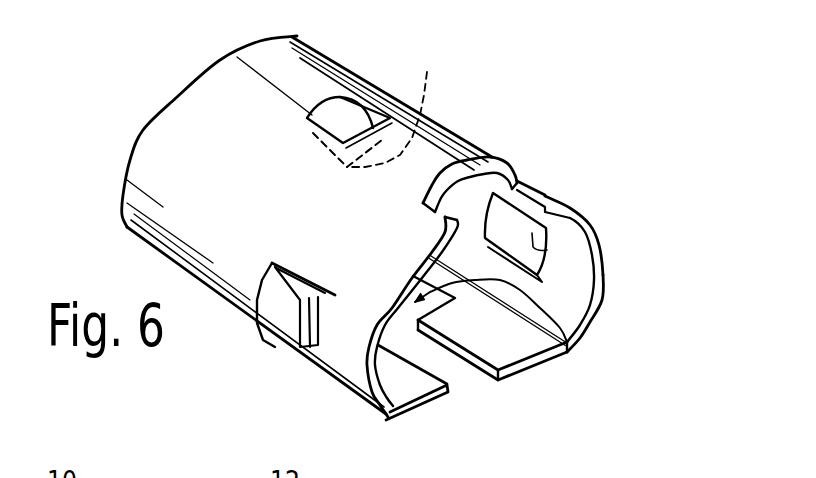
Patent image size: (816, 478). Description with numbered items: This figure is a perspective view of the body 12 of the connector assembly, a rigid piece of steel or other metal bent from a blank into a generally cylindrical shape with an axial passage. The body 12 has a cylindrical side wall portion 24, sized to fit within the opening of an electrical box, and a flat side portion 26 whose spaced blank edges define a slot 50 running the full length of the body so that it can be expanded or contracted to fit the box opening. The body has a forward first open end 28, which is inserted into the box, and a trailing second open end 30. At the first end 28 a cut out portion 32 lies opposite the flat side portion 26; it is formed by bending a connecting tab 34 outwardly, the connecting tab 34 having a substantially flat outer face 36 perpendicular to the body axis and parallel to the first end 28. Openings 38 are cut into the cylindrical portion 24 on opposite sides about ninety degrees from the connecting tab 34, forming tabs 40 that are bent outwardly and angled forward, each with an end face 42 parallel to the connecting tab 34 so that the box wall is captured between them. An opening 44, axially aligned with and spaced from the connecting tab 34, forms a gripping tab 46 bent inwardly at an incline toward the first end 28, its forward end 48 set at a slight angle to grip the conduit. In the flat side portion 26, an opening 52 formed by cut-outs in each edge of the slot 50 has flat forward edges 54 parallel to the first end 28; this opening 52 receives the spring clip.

The body 12 is at (615, 214).
The cylindrical side wall portion 24 is at (224, 225).
The flat side portion 26 is at (512, 371).
The first open end 28 is at (632, 313).
The second open end 30 is at (302, 102).
The cut out portion 32 is at (400, 317).
The connecting tab 34 is at (556, 155).
The outer face 36 is at (487, 133).
The openings 38 is at (312, 352).
The tabs 40 is at (429, 289).
The end face 42 is at (280, 345).
The opening 44 is at (363, 92).
The gripping tab 46 is at (349, 76).
The forward end 48 is at (407, 107).
The slot 50 is at (491, 360).
The opening 52 is at (583, 340).
The forward edges 54 is at (416, 370).